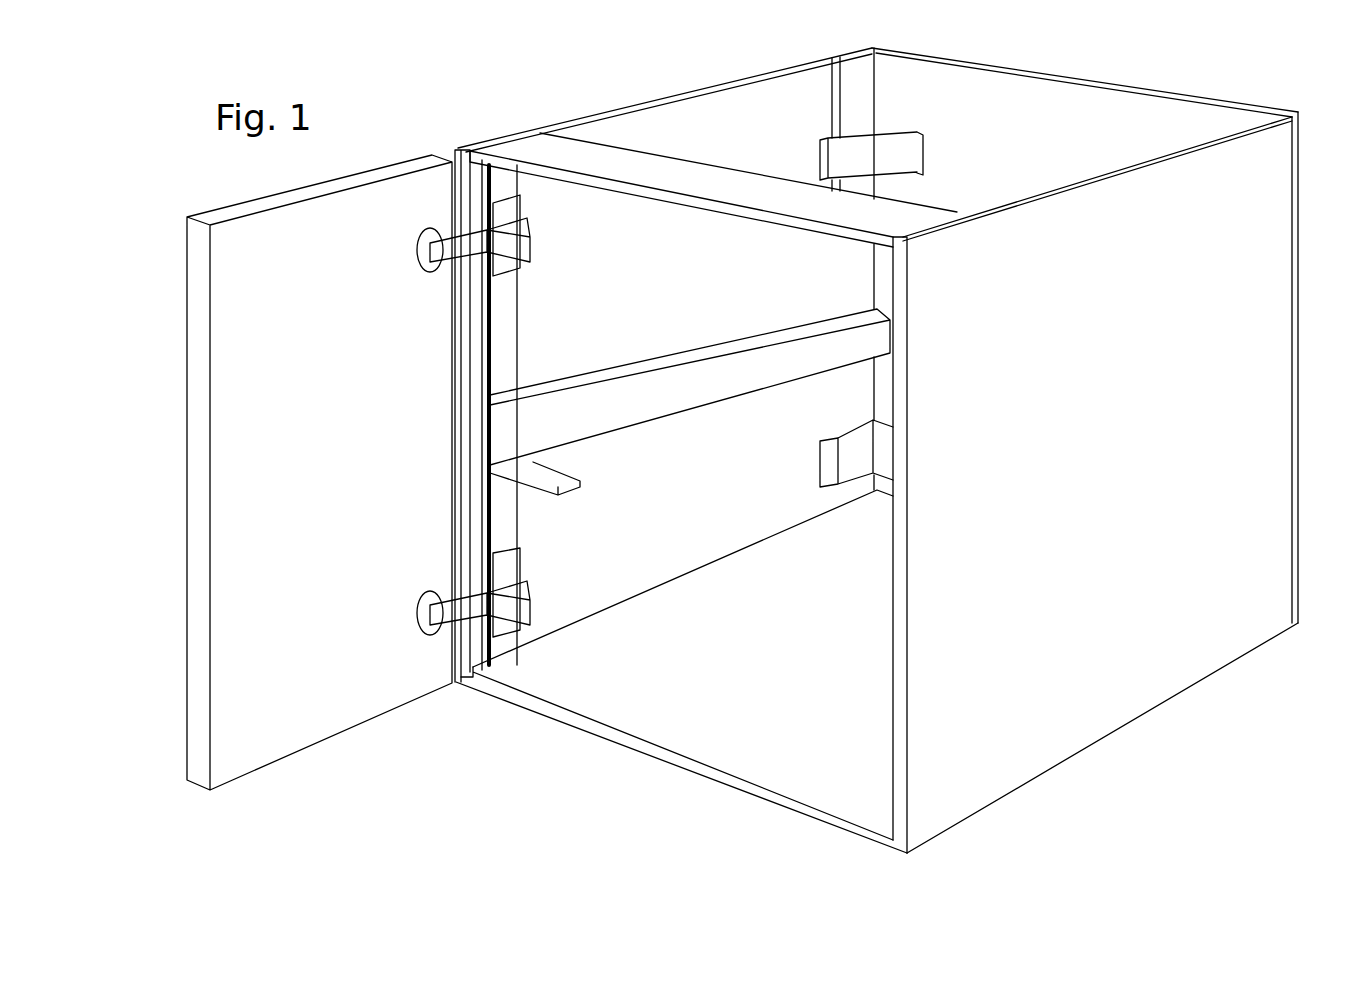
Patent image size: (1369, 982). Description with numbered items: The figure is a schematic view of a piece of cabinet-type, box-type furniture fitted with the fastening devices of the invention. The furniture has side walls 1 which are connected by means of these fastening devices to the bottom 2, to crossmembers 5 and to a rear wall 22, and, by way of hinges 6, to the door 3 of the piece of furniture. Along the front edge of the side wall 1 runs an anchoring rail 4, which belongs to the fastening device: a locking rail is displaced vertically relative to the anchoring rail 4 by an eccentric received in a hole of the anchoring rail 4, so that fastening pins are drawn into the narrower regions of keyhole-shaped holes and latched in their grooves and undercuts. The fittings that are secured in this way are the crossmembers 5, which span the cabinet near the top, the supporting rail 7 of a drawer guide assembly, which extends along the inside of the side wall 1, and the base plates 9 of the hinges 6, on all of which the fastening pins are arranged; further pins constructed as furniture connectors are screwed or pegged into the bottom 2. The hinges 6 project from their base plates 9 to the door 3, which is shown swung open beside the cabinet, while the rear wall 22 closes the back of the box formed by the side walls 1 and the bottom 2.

The side wall 1 is at (1265, 522).
The bottom 2 is at (787, 760).
The door 3 is at (277, 720).
The anchoring rail 4 is at (503, 337).
The crossmember 5 is at (618, 168).
The hinge 6 is at (438, 620).
The supporting rail 7 is at (517, 440).
The base plate 9 is at (518, 605).
The rear wall 22 is at (1083, 110).